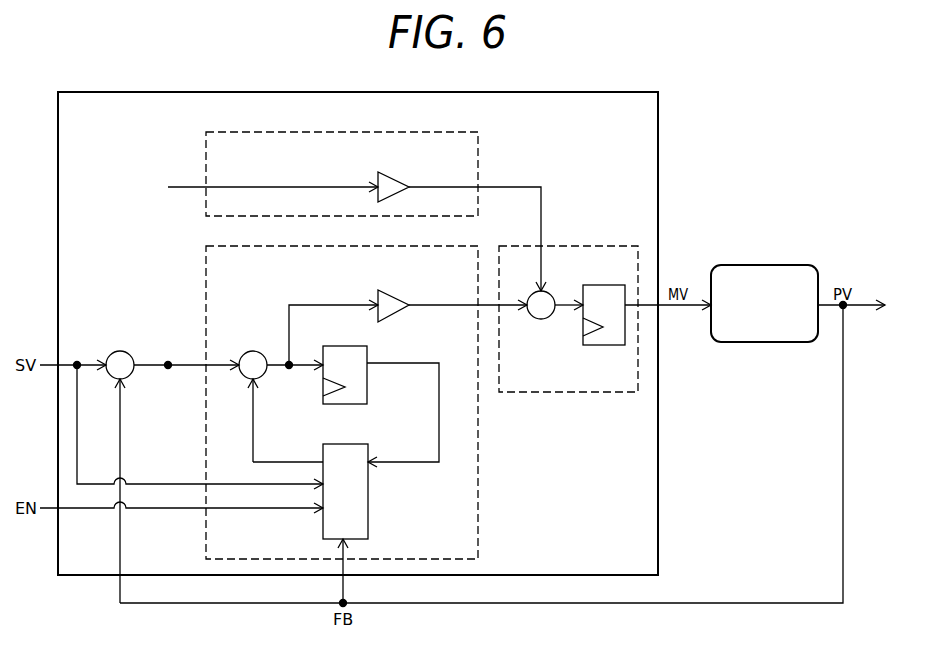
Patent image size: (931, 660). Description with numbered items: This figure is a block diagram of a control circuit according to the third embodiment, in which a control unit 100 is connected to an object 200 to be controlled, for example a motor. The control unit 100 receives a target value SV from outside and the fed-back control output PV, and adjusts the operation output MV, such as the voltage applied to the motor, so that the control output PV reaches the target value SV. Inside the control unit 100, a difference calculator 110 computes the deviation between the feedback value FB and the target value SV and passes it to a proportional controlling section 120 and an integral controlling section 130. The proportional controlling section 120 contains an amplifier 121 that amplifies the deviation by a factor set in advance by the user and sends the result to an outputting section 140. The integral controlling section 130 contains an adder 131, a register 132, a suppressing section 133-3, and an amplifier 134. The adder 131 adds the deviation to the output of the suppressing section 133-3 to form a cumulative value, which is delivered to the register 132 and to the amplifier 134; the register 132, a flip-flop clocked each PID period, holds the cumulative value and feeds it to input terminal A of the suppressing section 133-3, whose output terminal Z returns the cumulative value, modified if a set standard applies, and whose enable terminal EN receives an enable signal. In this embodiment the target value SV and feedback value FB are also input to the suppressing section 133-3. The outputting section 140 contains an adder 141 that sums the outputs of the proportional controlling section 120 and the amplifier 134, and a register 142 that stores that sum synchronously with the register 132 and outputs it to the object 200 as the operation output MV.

The control unit 100 is at (658, 98).
The difference calculator 110 is at (120, 351).
The proportional controlling section 120 is at (478, 140).
The amplifier 121 is at (378, 172).
The integral controlling section 130 is at (460, 246).
The adder 131 is at (253, 351).
The register 132 is at (367, 384).
The suppressing section 133-3 is at (368, 488).
The amplifier 134 is at (378, 291).
The outputting section 140 is at (600, 246).
The adder 141 is at (541, 319).
The register 142 is at (610, 345).
The object to be controlled 200 is at (755, 265).